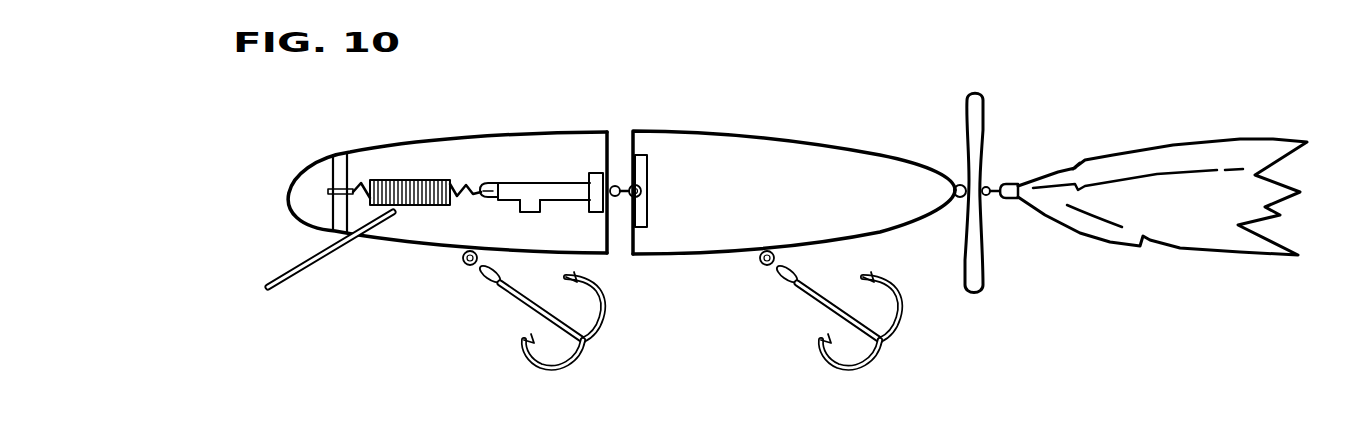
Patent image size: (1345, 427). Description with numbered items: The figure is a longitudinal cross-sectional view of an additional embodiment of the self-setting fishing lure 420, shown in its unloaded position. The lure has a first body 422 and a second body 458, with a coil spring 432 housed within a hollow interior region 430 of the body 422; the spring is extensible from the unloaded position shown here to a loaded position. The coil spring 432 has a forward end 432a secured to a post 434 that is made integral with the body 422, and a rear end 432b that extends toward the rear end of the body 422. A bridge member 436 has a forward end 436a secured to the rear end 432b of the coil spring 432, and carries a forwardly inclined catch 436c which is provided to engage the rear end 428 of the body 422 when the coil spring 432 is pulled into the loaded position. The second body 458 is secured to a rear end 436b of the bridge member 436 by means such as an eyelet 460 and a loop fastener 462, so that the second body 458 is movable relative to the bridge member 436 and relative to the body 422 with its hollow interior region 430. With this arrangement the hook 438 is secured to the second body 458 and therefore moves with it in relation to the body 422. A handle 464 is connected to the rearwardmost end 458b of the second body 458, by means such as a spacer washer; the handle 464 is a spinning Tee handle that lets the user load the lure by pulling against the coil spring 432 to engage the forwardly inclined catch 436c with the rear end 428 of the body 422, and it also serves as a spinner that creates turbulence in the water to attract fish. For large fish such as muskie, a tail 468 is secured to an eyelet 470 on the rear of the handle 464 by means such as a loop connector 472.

The self-setting fishing lure 420 is at (705, 72).
The first body 422 is at (467, 137).
The rear end of the body 428 is at (612, 150).
The hollow interior region 430 is at (575, 148).
The coil spring 432 is at (391, 174).
The forward end of the coil spring 432a is at (333, 210).
The rear end of the coil spring 432b is at (470, 205).
The post 434 is at (330, 163).
The bridge member 436 is at (535, 182).
The forward end of the bridge member 436a is at (483, 203).
The rear end of the bridge member 436b is at (642, 158).
The forwardly inclined catch 436c is at (530, 213).
The hook 438 is at (880, 345).
The second body 458 is at (818, 152).
The rearwardmost end of the second body 458b is at (910, 216).
The eyelet 460 is at (645, 185).
The loop fastener 462 is at (614, 200).
The handle 464 is at (976, 143).
The tail 468 is at (1183, 162).
The eyelet 470 is at (987, 200).
The loop connector 472 is at (1002, 183).